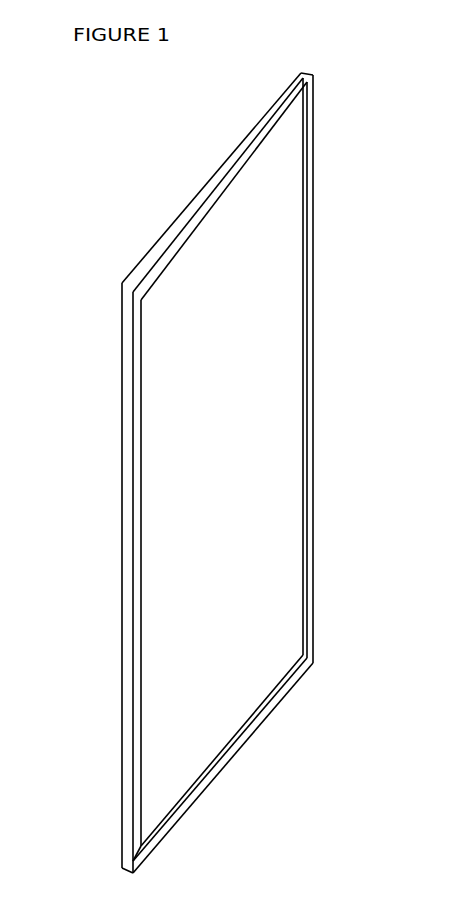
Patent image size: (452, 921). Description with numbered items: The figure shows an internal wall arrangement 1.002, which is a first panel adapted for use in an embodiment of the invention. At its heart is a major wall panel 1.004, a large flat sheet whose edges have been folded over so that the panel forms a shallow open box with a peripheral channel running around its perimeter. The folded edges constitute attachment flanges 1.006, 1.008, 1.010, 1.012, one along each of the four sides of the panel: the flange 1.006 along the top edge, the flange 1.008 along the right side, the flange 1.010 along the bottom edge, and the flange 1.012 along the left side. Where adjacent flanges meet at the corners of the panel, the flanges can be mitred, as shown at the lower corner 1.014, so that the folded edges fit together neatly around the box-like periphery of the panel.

The internal wall arrangement 1.002 is at (132, 141).
The major wall panel 1.004 is at (178, 378).
The attachment flange 1.006 is at (194, 241).
The attachment flange 1.008 is at (314, 185).
The attachment flange 1.010 is at (262, 718).
The attachment flange 1.012 is at (137, 710).
The mitred corner 1.014 is at (145, 864).